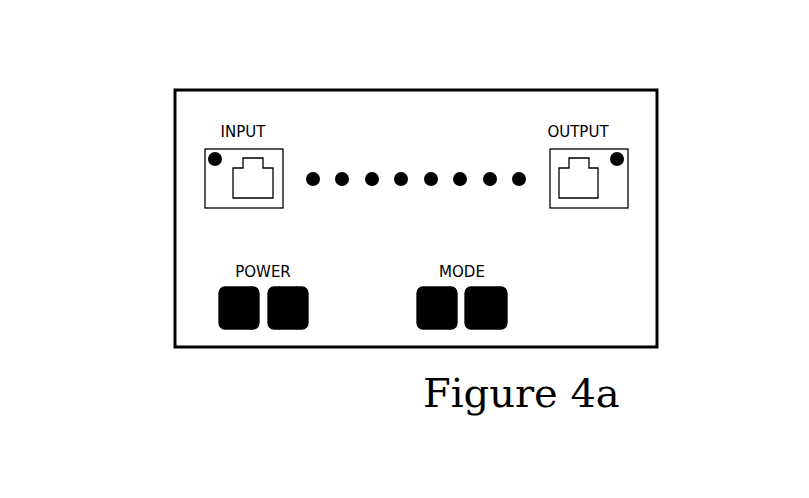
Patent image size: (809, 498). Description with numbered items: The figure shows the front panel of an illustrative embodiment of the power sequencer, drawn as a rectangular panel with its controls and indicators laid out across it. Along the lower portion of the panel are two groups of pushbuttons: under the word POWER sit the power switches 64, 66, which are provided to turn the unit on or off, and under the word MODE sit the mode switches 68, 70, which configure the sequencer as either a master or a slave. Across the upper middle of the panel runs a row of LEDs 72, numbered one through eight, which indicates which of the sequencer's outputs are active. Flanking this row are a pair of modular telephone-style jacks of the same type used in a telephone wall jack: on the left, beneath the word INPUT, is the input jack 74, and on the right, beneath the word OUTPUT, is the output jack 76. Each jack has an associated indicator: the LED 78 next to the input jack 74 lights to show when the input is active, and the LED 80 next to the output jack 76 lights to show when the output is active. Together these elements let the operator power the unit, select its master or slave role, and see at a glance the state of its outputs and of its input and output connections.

The power switch 64 is at (224, 327).
The power switch 66 is at (293, 325).
The mode switch 68 is at (413, 326).
The mode switch 70 is at (511, 318).
The row of LEDs 72 is at (401, 138).
The input RJ-11 jack 74 is at (223, 198).
The output RJ-11 jack 76 is at (556, 157).
The input LED 78 is at (207, 154).
The output LED 80 is at (623, 152).